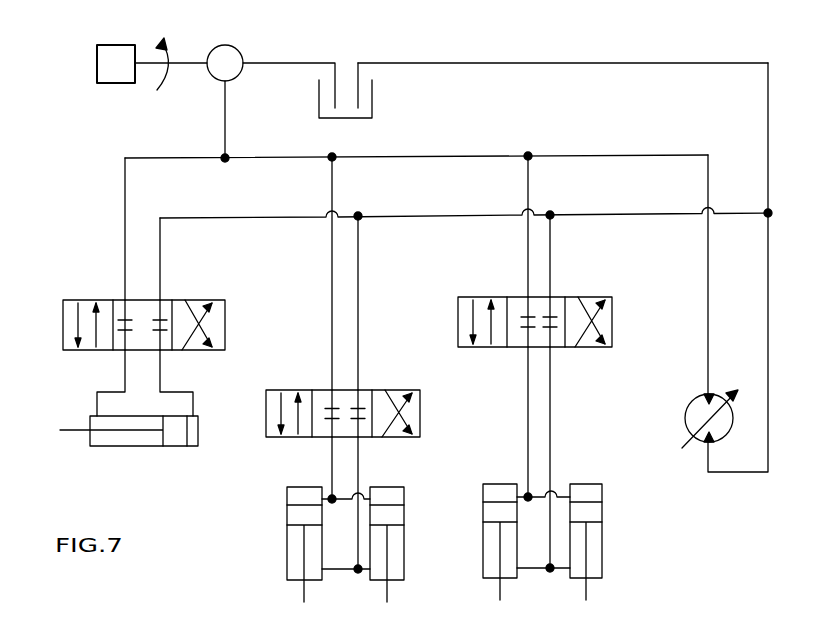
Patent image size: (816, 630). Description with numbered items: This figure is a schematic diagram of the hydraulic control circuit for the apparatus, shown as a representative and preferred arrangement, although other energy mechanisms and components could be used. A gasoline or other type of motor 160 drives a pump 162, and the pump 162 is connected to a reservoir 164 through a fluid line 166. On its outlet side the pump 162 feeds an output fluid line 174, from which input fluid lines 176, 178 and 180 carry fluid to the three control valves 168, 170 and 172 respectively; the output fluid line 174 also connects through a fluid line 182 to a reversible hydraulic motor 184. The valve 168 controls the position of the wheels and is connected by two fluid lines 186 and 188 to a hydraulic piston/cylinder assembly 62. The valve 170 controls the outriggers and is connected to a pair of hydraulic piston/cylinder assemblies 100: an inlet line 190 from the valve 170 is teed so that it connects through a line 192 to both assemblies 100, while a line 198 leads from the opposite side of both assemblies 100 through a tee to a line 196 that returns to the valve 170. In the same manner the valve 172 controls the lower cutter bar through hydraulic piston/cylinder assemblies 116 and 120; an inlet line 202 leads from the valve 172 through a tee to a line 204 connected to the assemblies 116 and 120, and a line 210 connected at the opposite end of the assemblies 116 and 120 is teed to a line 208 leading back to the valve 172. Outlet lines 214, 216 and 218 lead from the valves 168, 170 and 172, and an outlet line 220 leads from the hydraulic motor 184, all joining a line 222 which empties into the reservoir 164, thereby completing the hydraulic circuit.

The motor 160 is at (109, 45).
The pump 162 is at (237, 45).
The reservoir 164 is at (319, 107).
The fluid line 166 is at (292, 63).
The output fluid line 174 is at (225, 106).
The input fluid line 176 is at (125, 225).
The input fluid line 178 is at (332, 265).
The input fluid line 180 is at (528, 262).
The fluid line 182 is at (708, 308).
The reversible hydraulic motor 184 is at (686, 418).
The outlet line 214 is at (243, 217).
The outlet line 216 is at (358, 265).
The outlet line 218 is at (550, 255).
The outlet line 220 is at (768, 252).
The line 222 is at (452, 63).
The valve 168 is at (63, 305).
The valve 170 is at (266, 415).
The valve 172 is at (458, 324).
The fluid line 186 is at (125, 372).
The fluid line 188 is at (160, 372).
The hydraulic piston/cylinder assembly 62 is at (140, 446).
The inlet line 190 is at (332, 457).
The line 192 is at (329, 494).
The line 196 is at (358, 457).
The line 198 is at (341, 570).
The hydraulic piston/cylinder assemblies 100 is at (287, 556).
The inlet line 202 is at (528, 393).
The line 204 is at (527, 493).
The line 208 is at (550, 425).
The line 210 is at (533, 569).
The hydraulic piston/cylinder assembly 116 is at (483, 536).
The hydraulic piston/cylinder assembly 120 is at (603, 556).